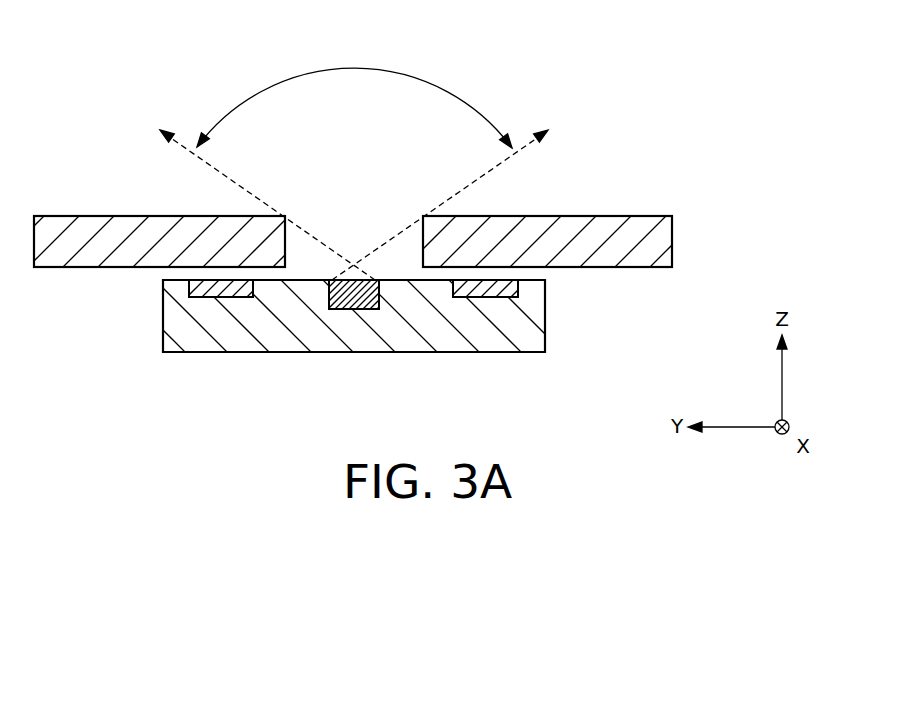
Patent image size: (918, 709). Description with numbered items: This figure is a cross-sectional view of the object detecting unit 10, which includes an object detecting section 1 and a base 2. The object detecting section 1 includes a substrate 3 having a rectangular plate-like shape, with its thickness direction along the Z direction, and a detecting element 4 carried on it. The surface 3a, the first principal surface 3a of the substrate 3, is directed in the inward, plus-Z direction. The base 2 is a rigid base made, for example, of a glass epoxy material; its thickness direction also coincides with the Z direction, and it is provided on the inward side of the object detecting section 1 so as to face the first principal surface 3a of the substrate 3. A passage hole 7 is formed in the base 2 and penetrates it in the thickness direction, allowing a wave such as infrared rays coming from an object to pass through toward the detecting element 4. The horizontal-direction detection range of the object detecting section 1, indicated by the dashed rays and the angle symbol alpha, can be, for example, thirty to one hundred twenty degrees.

The object detecting section 1 is at (550, 341).
The base 2 is at (660, 242).
The substrate 3 is at (546, 314).
The first principal surface 3a is at (308, 278).
The detecting element 4 is at (356, 309).
The passage hole 7 is at (422, 233).
The object detecting unit 10 is at (615, 191).